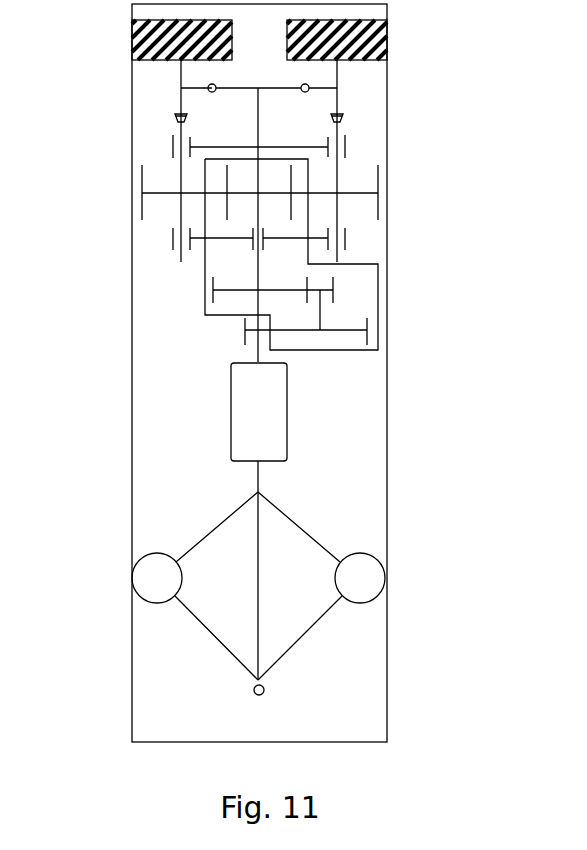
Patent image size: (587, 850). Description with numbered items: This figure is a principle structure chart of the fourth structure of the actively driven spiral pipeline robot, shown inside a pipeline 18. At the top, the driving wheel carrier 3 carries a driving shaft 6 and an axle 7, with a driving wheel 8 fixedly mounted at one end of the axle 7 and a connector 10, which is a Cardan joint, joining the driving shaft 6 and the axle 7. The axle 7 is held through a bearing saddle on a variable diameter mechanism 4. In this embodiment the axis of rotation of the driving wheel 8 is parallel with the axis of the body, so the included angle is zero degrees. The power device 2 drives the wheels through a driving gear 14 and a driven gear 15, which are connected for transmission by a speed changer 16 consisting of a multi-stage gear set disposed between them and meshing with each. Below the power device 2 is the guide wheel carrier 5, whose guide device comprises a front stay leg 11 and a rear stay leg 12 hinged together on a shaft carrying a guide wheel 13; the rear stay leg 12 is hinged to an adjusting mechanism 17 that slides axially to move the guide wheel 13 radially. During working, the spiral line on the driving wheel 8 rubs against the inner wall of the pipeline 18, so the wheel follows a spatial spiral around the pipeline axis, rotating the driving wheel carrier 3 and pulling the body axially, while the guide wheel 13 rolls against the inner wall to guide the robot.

The power device 2 is at (267, 410).
The driving wheel carrier 3 is at (258, 117).
The variable diameter mechanism 4 is at (340, 62).
The guide wheel carrier 5 is at (262, 540).
The driving shaft 6 is at (173, 147).
The axle 7 is at (181, 85).
The driving wheel 8 is at (132, 60).
The connector 10 is at (178, 120).
The front stay leg 11 is at (195, 530).
The rear stay leg 12 is at (190, 620).
The guide wheel 13 is at (135, 590).
The driving gear 14 is at (245, 330).
The driven gear 15 is at (142, 198).
The speed changer 16 is at (205, 290).
The adjusting mechanism 17 is at (265, 690).
The pipeline 18 is at (132, 520).